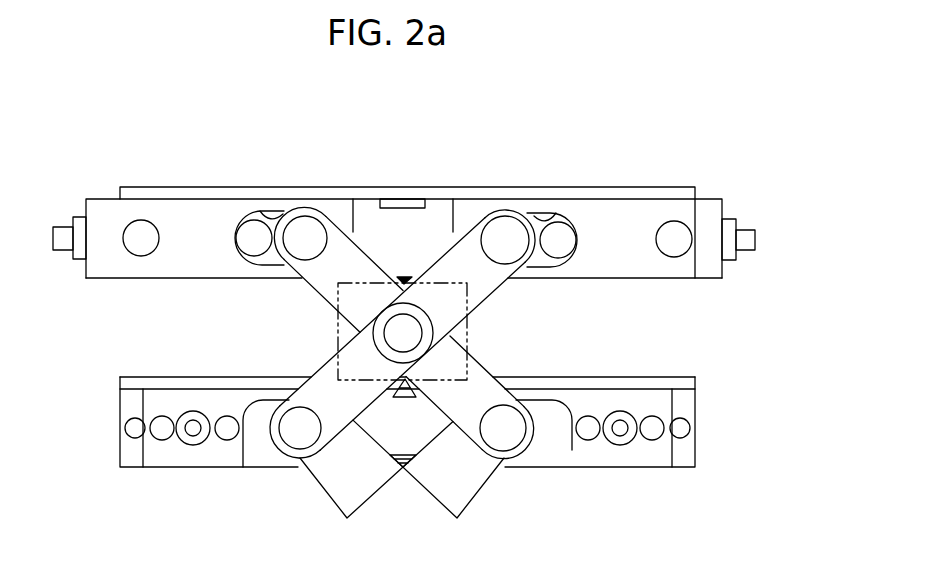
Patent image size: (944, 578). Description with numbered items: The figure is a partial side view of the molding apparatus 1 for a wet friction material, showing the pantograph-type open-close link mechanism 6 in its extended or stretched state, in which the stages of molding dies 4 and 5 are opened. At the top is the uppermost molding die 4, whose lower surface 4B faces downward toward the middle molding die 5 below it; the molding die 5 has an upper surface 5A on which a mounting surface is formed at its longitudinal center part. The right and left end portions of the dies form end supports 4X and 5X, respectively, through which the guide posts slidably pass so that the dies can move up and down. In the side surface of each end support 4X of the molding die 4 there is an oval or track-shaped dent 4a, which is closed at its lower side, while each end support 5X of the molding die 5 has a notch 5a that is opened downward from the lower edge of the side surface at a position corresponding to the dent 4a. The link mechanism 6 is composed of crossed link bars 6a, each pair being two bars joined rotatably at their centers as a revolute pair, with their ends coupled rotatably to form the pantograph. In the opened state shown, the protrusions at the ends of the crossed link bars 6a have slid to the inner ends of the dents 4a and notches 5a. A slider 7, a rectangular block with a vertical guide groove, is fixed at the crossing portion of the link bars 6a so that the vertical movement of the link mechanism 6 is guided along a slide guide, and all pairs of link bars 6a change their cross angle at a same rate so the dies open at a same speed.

The molding apparatus 1 is at (594, 166).
The molding die 4 is at (638, 213).
The end support 4X is at (100, 205).
The lower surface 4B is at (629, 282).
The dent 4a is at (278, 208).
The molding die 5 is at (657, 403).
The upper surface 5A is at (650, 378).
The end support 5X is at (156, 458).
The notch 5a is at (243, 467).
The pantograph-type open-close link mechanism 6 is at (327, 355).
The crossed link bar 6a is at (467, 250).
The slider 7 is at (468, 331).